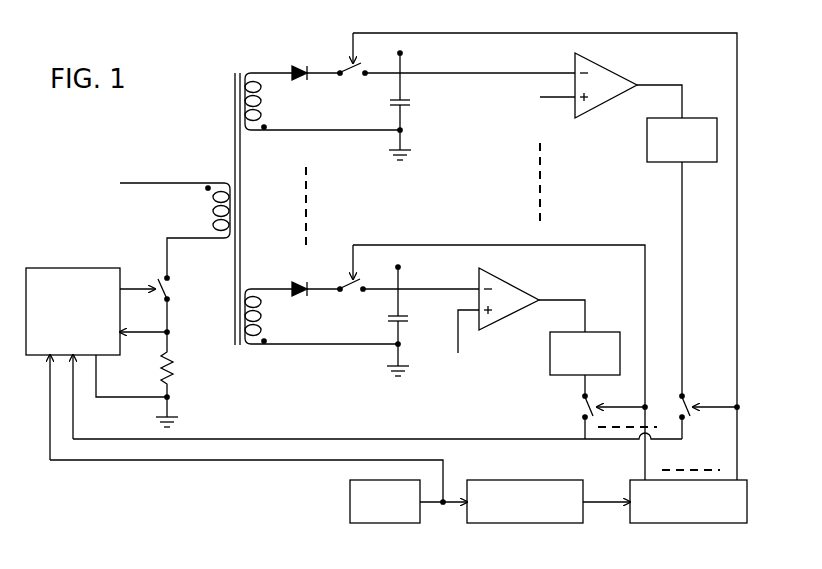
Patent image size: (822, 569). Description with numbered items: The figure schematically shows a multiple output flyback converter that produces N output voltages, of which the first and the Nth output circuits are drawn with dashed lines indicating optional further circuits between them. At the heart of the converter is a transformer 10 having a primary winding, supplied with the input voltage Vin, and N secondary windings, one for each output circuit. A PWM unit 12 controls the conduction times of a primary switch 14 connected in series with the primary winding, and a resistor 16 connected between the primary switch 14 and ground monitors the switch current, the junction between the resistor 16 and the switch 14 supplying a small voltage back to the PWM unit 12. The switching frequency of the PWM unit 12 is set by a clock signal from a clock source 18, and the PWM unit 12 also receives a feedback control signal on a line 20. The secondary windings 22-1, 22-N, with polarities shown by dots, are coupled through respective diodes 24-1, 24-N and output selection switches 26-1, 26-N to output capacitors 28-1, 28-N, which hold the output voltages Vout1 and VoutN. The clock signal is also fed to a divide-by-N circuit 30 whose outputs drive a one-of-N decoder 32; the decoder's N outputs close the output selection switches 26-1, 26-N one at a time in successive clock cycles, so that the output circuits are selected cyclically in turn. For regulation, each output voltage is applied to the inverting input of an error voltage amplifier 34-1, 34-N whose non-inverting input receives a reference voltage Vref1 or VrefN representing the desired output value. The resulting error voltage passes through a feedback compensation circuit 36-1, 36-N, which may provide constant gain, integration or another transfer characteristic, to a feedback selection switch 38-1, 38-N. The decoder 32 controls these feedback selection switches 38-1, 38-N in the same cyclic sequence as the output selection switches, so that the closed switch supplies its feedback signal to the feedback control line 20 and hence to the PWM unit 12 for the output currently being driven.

The transformer 10 is at (232, 176).
The PWM unit 12 is at (70, 268).
The primary switch 14 is at (156, 272).
The resistor 16 is at (172, 367).
The clock source 18 is at (346, 491).
The feedback control line 20 is at (214, 439).
The secondary winding 22-1 is at (264, 99).
The secondary winding 22-N is at (264, 313).
The diode 24-1 is at (290, 66).
The diode 24-N is at (290, 282).
The output selection switch 26-1 is at (352, 78).
The output selection switch 26-N is at (352, 294).
The output capacitor 28-1 is at (411, 102).
The output capacitor 28-N is at (409, 318).
The divide-by-N circuit 30 is at (536, 480).
The 1-of-N decoder 32 is at (630, 480).
The error voltage amplifier 34-1 is at (604, 70).
The error voltage amplifier 34-N is at (510, 287).
The feedback compensation circuit 36-1 is at (646, 148).
The feedback compensation circuit 36-N is at (549, 366).
The feedback selection switch 38-1 is at (683, 397).
The feedback selection switch 38-N is at (581, 408).